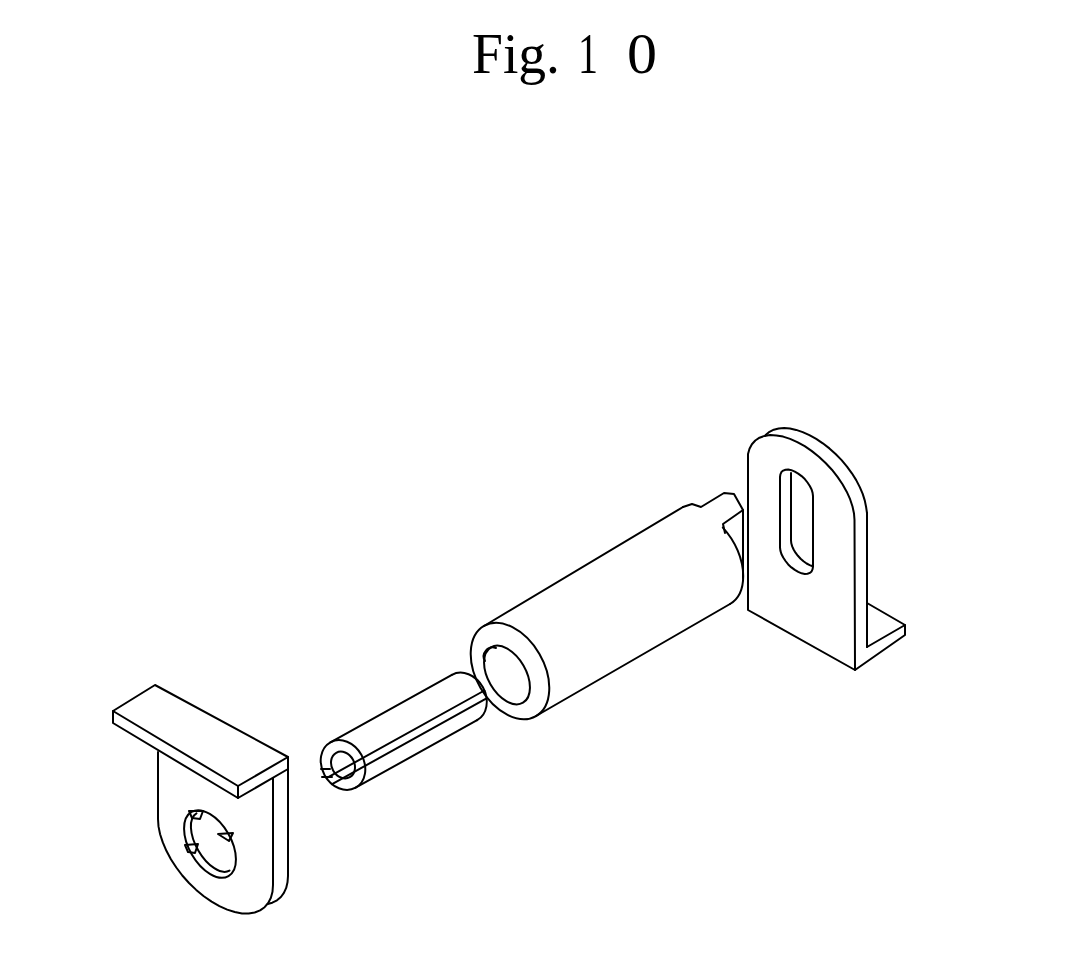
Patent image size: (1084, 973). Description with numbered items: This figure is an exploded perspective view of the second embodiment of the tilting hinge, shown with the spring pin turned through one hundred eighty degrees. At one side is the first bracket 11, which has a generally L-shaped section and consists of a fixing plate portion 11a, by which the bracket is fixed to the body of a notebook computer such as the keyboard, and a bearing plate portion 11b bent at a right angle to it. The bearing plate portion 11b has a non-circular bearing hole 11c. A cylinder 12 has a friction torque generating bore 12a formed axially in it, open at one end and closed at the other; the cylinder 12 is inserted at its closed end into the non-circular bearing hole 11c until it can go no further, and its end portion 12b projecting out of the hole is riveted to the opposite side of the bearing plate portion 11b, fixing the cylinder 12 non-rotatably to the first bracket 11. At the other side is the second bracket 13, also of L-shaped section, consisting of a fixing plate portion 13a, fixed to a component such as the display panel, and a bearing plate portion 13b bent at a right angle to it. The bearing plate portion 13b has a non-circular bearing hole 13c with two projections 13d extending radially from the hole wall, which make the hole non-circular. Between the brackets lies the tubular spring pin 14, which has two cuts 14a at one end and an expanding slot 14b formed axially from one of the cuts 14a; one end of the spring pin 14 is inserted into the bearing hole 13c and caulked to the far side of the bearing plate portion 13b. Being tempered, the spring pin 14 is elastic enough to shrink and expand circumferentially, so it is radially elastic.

The first bracket 11 is at (856, 527).
The fixing plate portion 11a is at (907, 632).
The bearing plate portion 11b is at (833, 465).
The non-circular bearing hole 11c is at (784, 479).
The cylinder 12 is at (599, 572).
The friction torque generating bore 12a is at (486, 651).
The end portion of the cylinder 12b is at (717, 507).
The second bracket 13 is at (211, 792).
The fixing plate portion 13a is at (157, 695).
The bearing plate portion 13b is at (240, 895).
The non-circular bearing hole 13c is at (207, 866).
The projections 13d is at (190, 836).
The tubular spring pin 14 is at (391, 745).
The cuts 14a is at (318, 753).
The expanding slot 14b is at (432, 735).